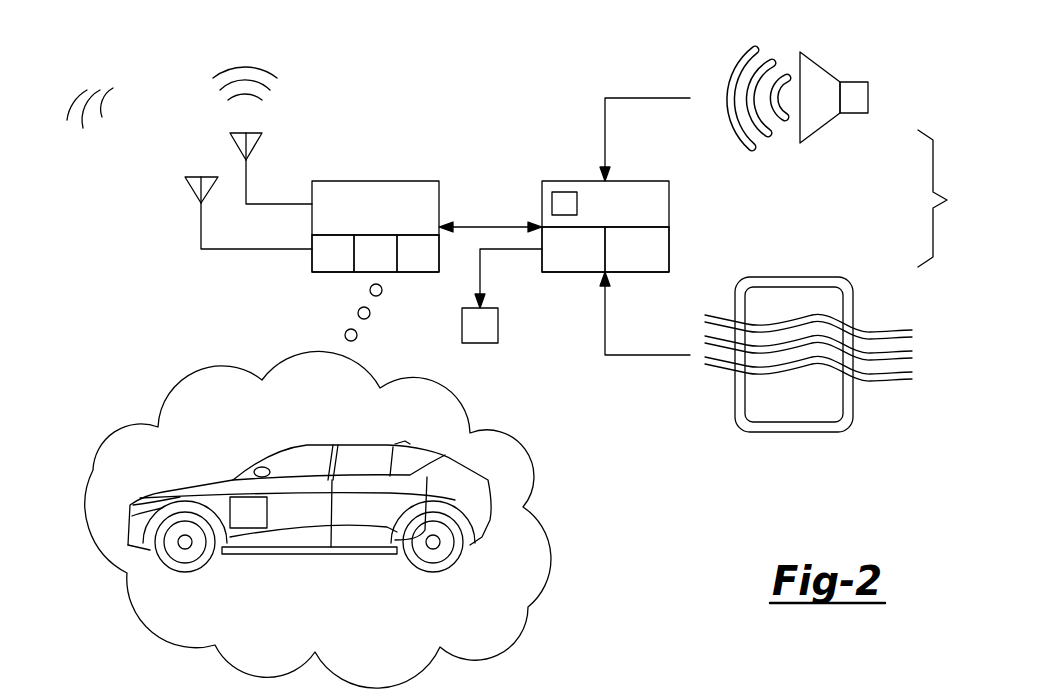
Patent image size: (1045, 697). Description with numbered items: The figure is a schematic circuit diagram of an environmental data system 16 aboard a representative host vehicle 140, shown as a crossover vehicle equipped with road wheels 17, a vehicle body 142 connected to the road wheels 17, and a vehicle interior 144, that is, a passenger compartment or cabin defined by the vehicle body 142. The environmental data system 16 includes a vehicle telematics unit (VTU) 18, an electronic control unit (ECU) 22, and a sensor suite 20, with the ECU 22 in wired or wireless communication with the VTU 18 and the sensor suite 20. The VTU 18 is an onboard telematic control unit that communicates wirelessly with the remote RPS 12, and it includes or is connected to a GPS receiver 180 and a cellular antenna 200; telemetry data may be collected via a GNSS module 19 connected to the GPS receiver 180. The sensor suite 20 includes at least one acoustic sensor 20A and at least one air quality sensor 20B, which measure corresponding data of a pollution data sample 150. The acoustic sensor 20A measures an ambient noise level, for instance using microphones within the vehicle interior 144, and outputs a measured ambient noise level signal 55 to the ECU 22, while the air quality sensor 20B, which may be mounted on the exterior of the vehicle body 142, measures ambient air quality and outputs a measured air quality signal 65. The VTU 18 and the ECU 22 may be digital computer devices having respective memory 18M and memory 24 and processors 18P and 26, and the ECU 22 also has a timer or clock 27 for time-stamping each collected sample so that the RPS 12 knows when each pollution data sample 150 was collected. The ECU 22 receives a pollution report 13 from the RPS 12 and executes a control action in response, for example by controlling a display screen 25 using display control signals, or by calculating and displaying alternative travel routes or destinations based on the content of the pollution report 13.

The RPS 12 is at (519, 684).
The pollution report 13 is at (100, 78).
The environmental data system 16 is at (253, 520).
The road wheels 17 is at (185, 572).
The vehicle telematics unit (VTU) 18 is at (372, 181).
The processor (P1) 18P is at (328, 273).
The memory (M1) 18M is at (390, 273).
The GNSS module 19 is at (418, 253).
The sensor suite 20 is at (945, 198).
The acoustic sensor 20A is at (857, 82).
The air quality sensor 20B is at (793, 433).
The electronic control unit (ECU) 22 is at (563, 181).
The memory (M) 24 is at (570, 273).
The display screen 25 is at (502, 296).
The processor (P) 26 is at (642, 273).
The timer or clock 27 is at (552, 200).
The measured ambient noise level signal 55 is at (645, 98).
The measured air quality signal 65 is at (645, 357).
The host vehicle 140 is at (540, 542).
The vehicle body 142 is at (186, 480).
The vehicle interior 144 is at (312, 473).
The pollution data sample 150 is at (262, 60).
The GPS receiver 180 is at (230, 152).
The cellular antenna 200 is at (185, 195).